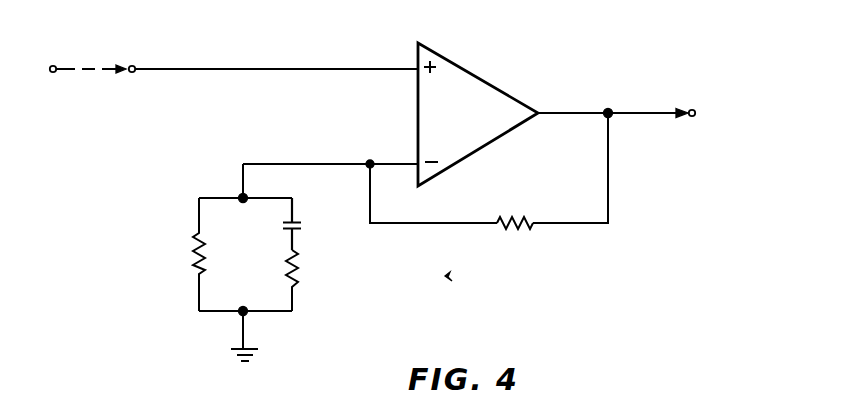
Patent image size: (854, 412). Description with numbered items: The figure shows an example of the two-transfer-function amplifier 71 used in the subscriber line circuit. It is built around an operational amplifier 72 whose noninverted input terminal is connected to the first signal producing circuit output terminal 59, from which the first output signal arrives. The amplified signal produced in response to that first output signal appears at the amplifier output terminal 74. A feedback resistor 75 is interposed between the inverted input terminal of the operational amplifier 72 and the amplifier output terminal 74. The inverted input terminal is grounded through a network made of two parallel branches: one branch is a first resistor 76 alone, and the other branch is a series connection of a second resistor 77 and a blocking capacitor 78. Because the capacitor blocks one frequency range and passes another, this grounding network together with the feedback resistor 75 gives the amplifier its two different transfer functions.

The first signal producing circuit output terminal 59 is at (55, 64).
The two-transfer-function amplifier 71 is at (448, 276).
The operational amplifier 72 is at (493, 85).
The amplifier output terminal 74 is at (700, 106).
The feedback resistor 75 is at (521, 231).
The first resistor 76 is at (193, 249).
The second resistor 77 is at (300, 278).
The blocking capacitor 78 is at (300, 222).